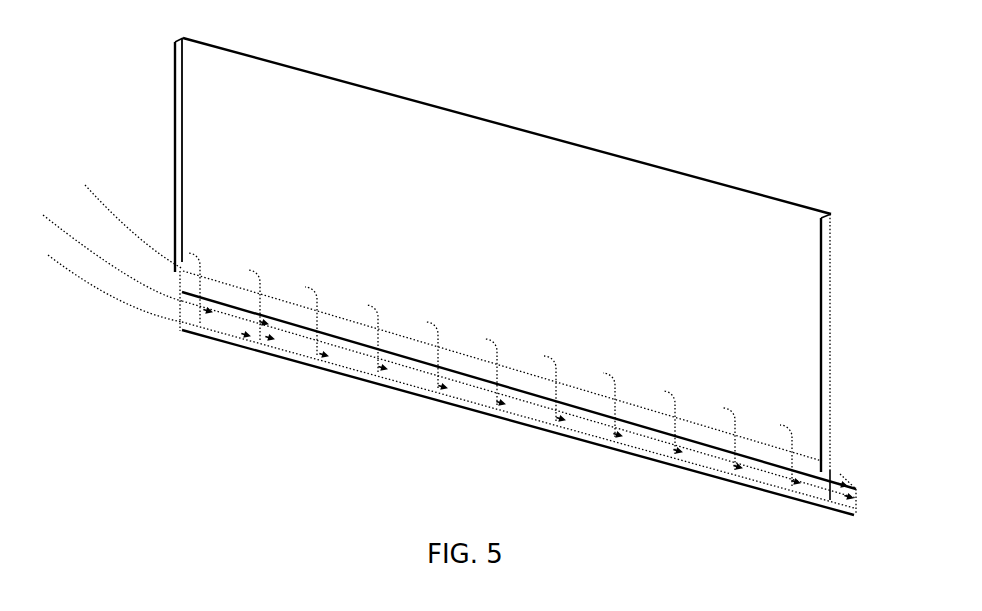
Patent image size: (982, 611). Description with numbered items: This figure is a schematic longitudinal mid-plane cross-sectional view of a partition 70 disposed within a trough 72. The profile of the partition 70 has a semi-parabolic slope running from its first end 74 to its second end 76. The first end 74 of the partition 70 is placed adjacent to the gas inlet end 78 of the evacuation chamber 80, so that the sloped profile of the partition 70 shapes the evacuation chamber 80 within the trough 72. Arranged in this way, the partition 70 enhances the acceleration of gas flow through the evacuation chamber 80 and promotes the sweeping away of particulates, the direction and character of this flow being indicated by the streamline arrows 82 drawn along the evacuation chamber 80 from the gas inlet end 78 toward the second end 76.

The partition 70 is at (745, 438).
The trough 72 is at (585, 125).
The first end 74 is at (193, 267).
The second end 76 is at (803, 458).
The gas inlet end 78 is at (182, 317).
The evacuation chamber 80 is at (480, 397).
The streamline arrows 82 is at (52, 222).